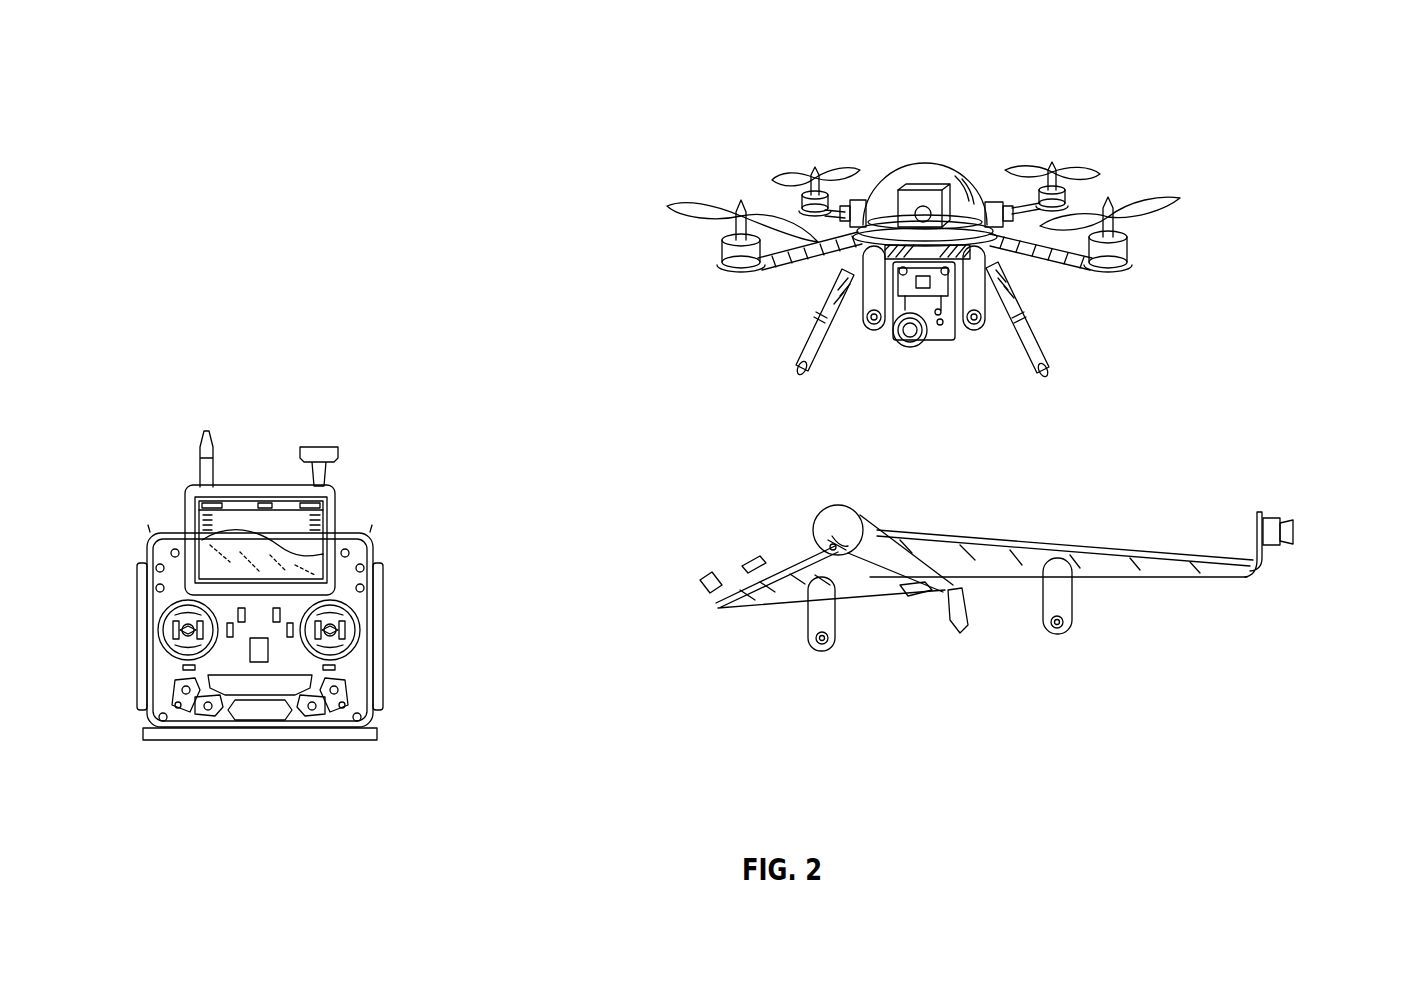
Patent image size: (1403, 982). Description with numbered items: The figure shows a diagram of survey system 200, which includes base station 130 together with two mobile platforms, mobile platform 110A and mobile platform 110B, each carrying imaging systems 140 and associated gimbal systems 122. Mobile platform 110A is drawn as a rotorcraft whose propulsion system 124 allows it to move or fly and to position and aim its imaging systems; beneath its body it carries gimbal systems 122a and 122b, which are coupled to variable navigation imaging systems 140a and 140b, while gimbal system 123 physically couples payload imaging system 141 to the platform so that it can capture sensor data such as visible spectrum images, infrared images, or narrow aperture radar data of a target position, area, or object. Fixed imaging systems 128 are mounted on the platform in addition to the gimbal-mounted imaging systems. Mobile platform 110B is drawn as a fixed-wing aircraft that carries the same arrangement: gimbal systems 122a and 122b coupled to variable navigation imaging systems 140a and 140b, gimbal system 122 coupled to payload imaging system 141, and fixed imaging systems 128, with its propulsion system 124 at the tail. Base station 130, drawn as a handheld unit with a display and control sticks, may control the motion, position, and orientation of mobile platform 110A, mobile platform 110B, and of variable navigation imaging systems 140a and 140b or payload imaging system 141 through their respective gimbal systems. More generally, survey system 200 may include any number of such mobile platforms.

The survey system 200 is at (203, 68).
The mobile platform 110A is at (719, 111).
The mobile platform 110B is at (719, 454).
The base station 130 is at (350, 397).
The fixed imaging systems 128 is at (860, 198).
The propulsion system 124 is at (1120, 228).
The gimbal system 122 is at (866, 590).
The gimbal system 122a is at (856, 311).
The gimbal system 122b is at (988, 313).
The imaging systems 140 is at (829, 545).
The variable navigation imaging system 140a is at (873, 330).
The variable navigation imaging system 140b is at (974, 330).
The gimbal system 123 is at (940, 322).
The payload imaging system 141 is at (896, 342).